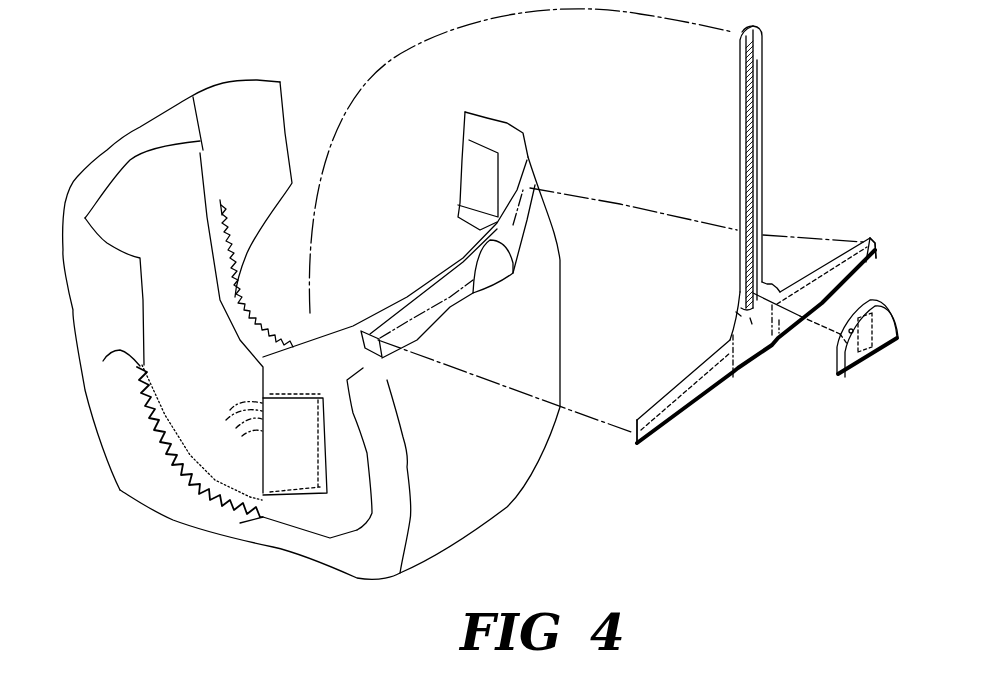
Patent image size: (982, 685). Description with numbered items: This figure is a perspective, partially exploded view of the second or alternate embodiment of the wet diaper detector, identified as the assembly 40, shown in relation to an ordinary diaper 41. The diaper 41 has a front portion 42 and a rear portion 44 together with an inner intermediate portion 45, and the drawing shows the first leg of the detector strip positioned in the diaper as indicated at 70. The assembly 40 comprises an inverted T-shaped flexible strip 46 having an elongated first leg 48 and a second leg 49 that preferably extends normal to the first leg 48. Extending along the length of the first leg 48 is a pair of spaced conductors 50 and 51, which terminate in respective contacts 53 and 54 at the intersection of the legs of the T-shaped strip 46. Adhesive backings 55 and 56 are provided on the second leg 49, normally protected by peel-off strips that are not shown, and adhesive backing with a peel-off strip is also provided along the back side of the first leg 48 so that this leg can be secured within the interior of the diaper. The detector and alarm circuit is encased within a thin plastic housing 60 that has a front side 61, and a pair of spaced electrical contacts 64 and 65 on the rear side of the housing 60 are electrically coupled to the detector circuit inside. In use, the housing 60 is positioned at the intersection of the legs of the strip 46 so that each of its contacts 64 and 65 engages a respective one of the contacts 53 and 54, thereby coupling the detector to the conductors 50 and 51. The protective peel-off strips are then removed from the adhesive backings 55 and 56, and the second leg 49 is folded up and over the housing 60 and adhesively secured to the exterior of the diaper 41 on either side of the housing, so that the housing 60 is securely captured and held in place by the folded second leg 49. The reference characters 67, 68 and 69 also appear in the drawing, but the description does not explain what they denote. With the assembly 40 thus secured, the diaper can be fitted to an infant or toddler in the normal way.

The wet diaper detector assembly 40 is at (772, 260).
The diaper 41 is at (450, 294).
The front portion 42 is at (118, 124).
The rear portion 44 is at (446, 257).
The inner intermediate portion 45 is at (182, 406).
The T-shaped flexible strip 46 is at (731, 312).
The first leg 48 is at (750, 163).
The second leg 49 is at (772, 361).
The conductor 50 is at (744, 62).
The conductor 51 is at (763, 34).
The contact 53 is at (738, 316).
The contact 54 is at (777, 289).
The adhesive backing 55 is at (657, 425).
The adhesive backing 56 is at (873, 250).
The housing 60 is at (863, 350).
The front side 61 is at (898, 342).
The electrical contact 64 is at (855, 383).
The electrical contact 65 is at (893, 312).
The first tab 67 is at (737, 372).
The second tab 68 is at (750, 322).
The third tab 69 is at (777, 333).
The first leg positioned in diaper 70 is at (240, 392).